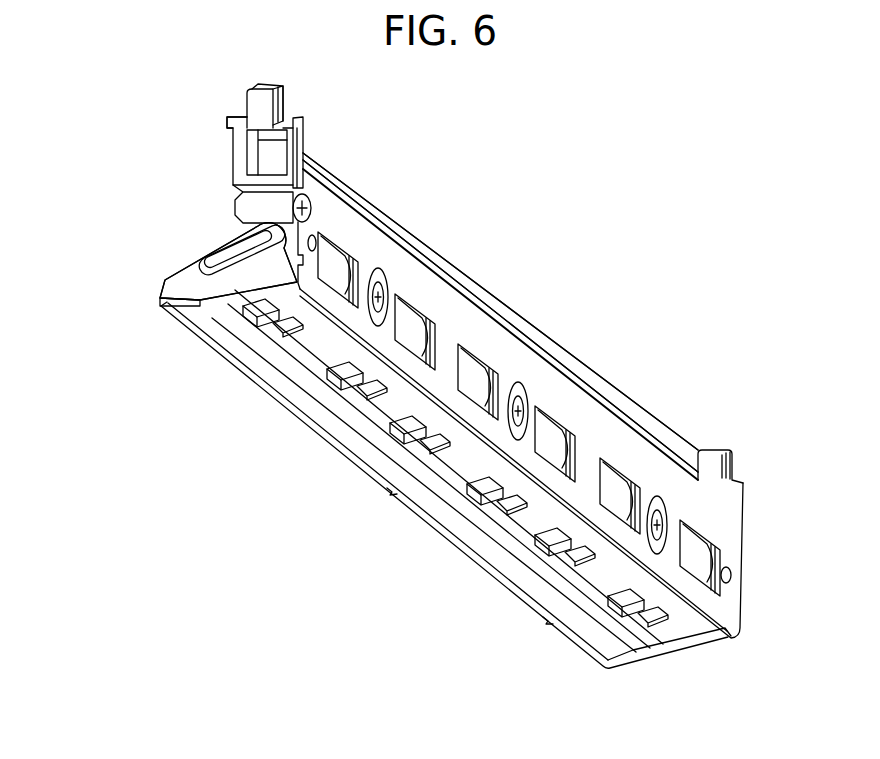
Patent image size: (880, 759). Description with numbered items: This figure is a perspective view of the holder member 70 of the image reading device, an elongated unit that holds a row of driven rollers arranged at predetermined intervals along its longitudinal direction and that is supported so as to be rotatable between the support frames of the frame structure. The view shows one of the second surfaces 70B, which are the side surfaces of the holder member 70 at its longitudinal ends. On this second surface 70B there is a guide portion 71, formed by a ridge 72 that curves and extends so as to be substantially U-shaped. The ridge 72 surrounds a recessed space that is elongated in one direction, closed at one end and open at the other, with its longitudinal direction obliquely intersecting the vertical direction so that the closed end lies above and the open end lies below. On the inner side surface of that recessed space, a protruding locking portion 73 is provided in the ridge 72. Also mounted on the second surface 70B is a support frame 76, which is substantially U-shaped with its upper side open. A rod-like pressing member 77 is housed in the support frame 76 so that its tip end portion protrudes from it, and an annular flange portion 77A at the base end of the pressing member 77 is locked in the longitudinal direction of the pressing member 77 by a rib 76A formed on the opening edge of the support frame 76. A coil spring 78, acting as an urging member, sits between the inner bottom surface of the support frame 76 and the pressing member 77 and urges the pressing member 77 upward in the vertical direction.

The holder member 70 is at (680, 346).
The second surface 70B is at (178, 288).
The guide portion 71 is at (160, 253).
The ridge 72 is at (217, 301).
The locking portion 73 is at (206, 252).
The support frame 76 is at (294, 146).
The rib 76A is at (236, 124).
The pressing member 77 is at (260, 95).
The flange portion 77A is at (303, 125).
The coil spring 78 is at (305, 168).